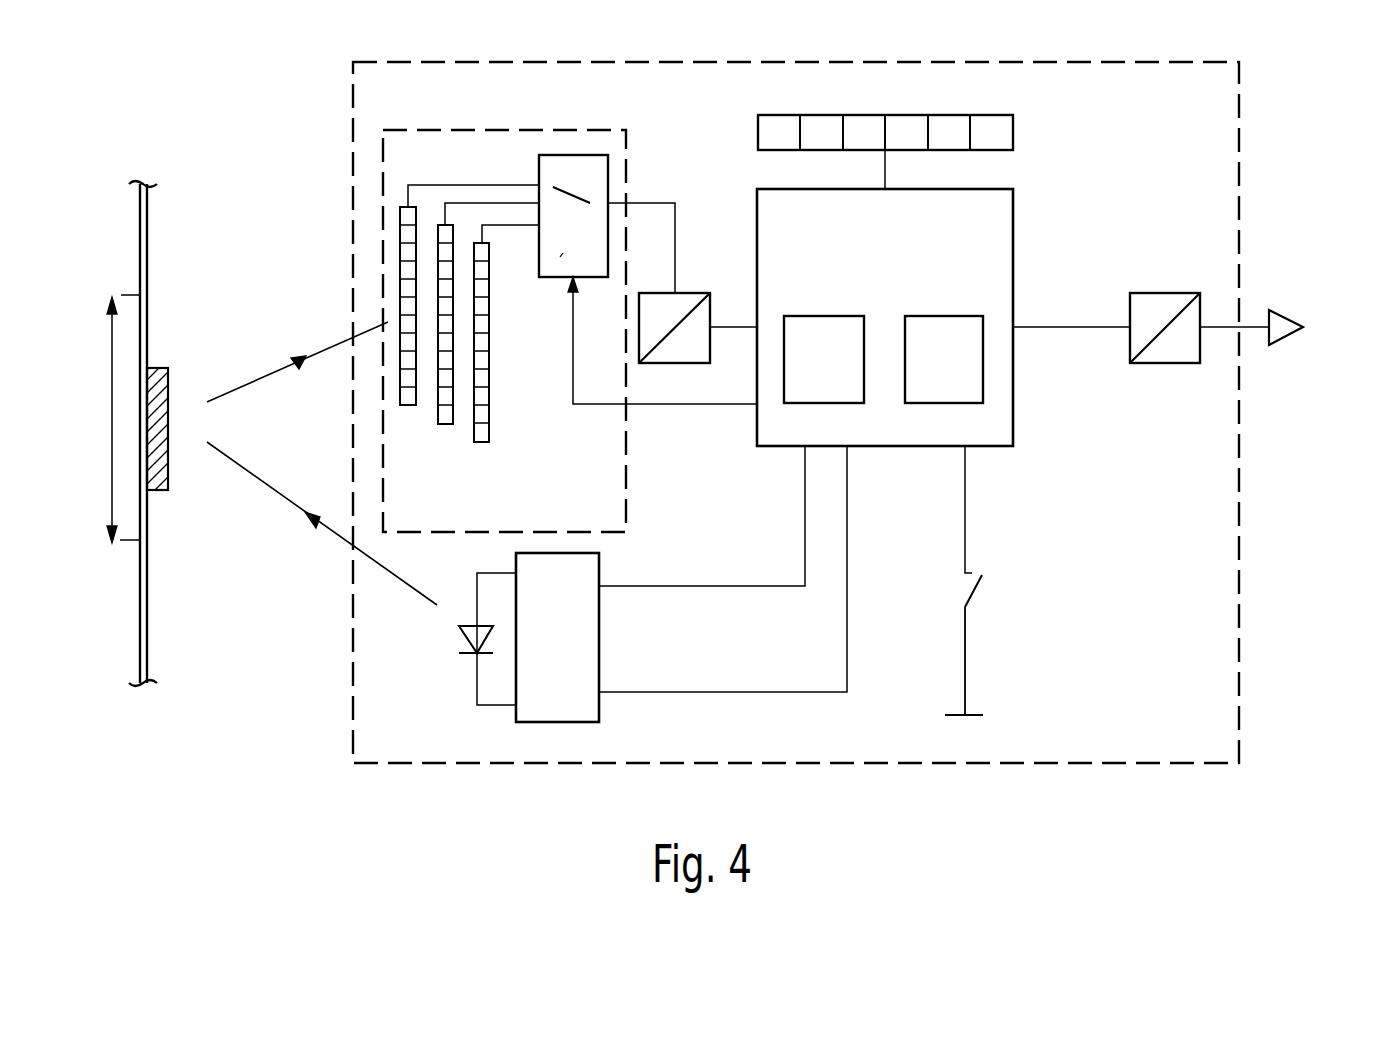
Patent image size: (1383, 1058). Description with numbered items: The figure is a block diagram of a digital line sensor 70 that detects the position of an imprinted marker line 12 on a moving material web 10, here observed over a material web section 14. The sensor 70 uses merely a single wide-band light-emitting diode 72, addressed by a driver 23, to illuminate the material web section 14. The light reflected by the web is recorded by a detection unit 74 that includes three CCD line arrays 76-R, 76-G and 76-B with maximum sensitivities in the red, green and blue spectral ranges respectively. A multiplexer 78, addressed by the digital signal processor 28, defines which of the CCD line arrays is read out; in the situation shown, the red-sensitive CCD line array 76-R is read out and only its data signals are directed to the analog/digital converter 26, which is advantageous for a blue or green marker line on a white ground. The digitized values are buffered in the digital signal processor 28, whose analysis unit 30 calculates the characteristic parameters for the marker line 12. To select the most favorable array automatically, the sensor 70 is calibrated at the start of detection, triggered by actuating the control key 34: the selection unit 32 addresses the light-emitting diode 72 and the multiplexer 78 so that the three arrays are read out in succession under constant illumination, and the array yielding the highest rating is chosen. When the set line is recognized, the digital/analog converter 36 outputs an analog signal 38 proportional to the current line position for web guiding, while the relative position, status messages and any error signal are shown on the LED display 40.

The material web 10 is at (149, 209).
The marker line 12 is at (160, 368).
The material web section 14 is at (112, 369).
The driver 23 is at (599, 708).
The analog/digital converter 26 is at (697, 292).
The digital signal processor 28 is at (1013, 218).
The analysis unit 30 is at (826, 316).
The selection unit 32 is at (946, 316).
The control key 34 is at (975, 590).
The digital/analog converter 36 is at (1165, 293).
The analog signal 38 is at (1292, 318).
The LED display 40 is at (1013, 133).
The digital line sensor 70 is at (1238, 507).
The wide-band light-emitting diode 72 is at (460, 641).
The detection unit 74 is at (627, 152).
The red-sensitive CCD line array 76-R is at (404, 405).
The green-sensitive CCD line array 76-G is at (443, 424).
The blue-sensitive CCD line array 76-B is at (490, 435).
The multiplexer 78 is at (539, 172).